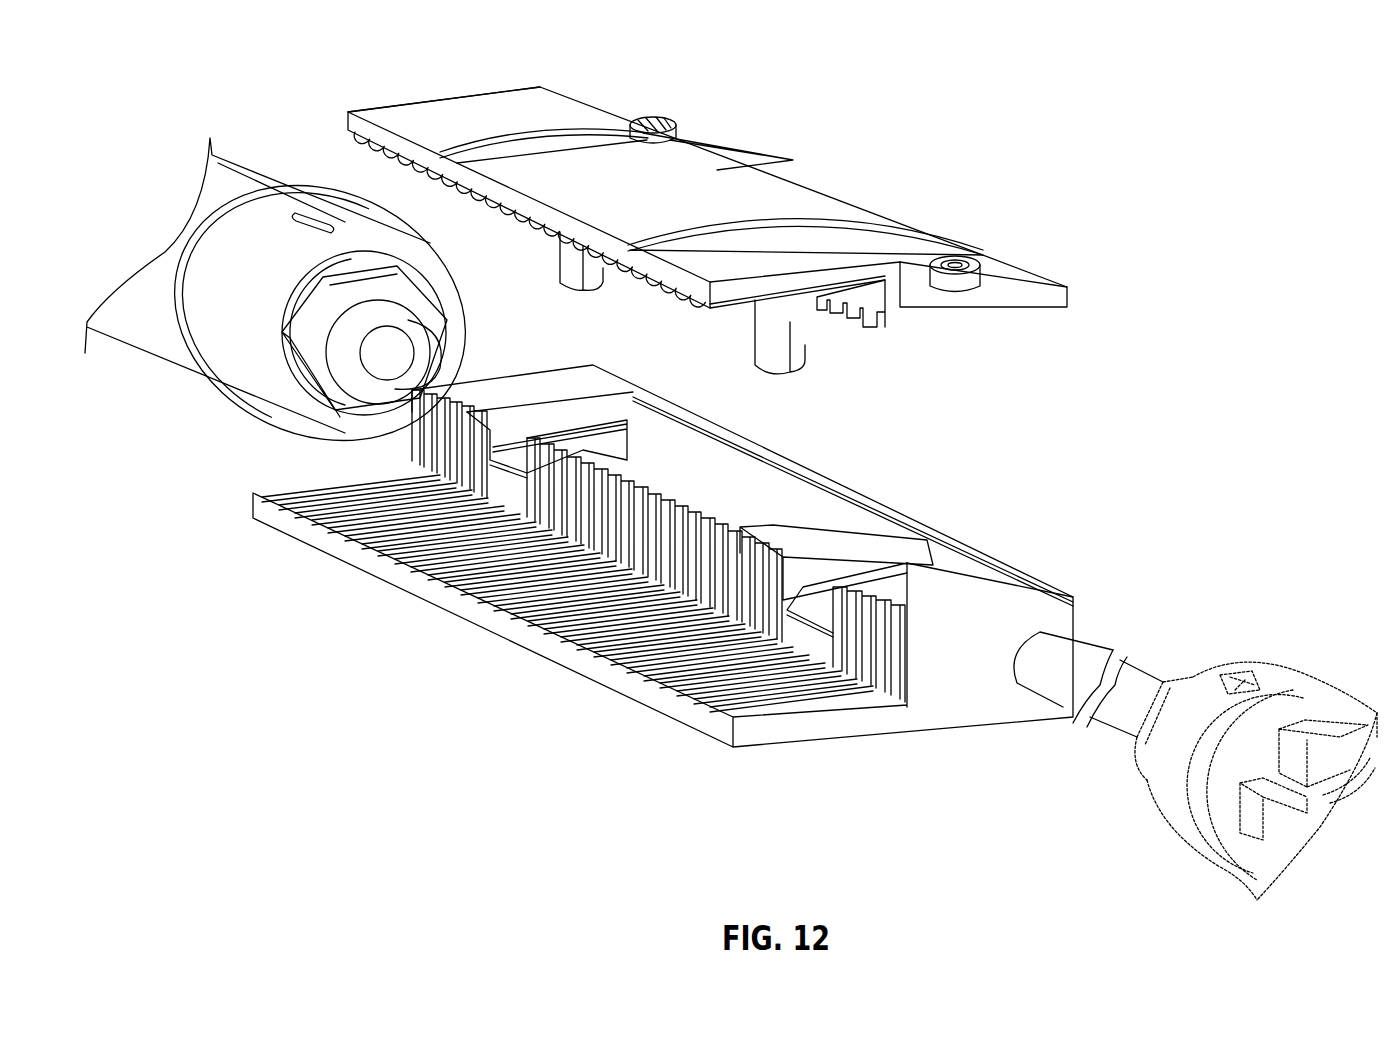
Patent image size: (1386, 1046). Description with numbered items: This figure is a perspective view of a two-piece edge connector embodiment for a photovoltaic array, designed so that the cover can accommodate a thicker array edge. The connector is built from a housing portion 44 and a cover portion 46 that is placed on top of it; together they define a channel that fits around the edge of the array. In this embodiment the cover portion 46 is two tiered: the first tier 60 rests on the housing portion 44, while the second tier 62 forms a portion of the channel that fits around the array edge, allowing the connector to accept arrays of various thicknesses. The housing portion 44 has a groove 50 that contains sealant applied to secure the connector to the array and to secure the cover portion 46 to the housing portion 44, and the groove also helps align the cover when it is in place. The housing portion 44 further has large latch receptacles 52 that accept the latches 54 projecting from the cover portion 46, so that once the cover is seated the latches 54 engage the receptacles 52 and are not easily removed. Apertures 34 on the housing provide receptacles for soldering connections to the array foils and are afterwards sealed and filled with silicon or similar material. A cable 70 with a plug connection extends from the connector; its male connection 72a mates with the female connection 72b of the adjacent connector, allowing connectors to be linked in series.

The apertures 34 is at (503, 458).
The housing portion 44 is at (310, 480).
The cover portion 46 is at (846, 169).
The groove 50 is at (663, 535).
The latch receptacles 52 is at (608, 445).
The latches 54 is at (577, 262).
The first tier 60 is at (990, 272).
The second tier 62 is at (487, 112).
The cable 70 is at (1133, 680).
The male connection 72a is at (345, 228).
The female connection 72b is at (1275, 678).